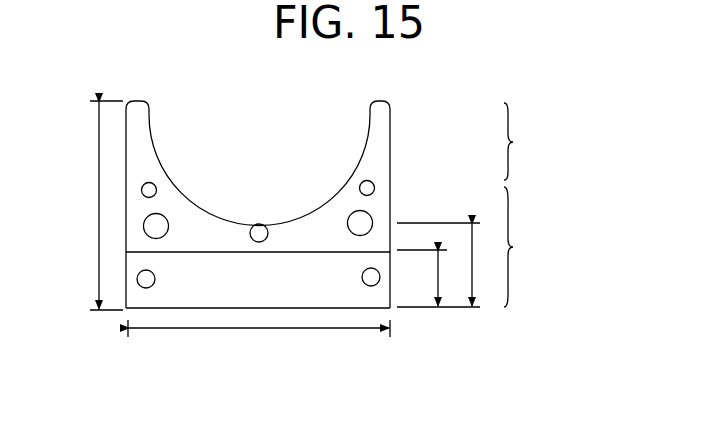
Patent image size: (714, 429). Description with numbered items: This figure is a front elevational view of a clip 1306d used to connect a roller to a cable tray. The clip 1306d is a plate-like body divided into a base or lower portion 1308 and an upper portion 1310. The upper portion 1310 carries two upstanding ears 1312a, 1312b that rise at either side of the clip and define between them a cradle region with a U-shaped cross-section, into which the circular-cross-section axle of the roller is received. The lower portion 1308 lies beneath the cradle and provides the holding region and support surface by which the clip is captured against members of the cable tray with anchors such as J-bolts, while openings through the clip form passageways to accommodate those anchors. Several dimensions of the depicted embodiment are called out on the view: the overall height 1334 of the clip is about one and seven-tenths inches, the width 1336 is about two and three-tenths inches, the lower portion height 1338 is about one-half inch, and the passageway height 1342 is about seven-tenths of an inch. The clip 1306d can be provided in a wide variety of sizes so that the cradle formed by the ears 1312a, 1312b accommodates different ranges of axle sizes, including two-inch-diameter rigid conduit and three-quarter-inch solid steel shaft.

The clip 1306d is at (389, 152).
The upstanding ear 1312a is at (143, 113).
The upstanding ear 1312b is at (377, 112).
The upper portion 1310 is at (533, 141).
The base portion 1308 is at (537, 247).
The height 1334 is at (99, 205).
The width 1336 is at (258, 328).
The lower portion height 1338 is at (440, 277).
The passageway height 1342 is at (473, 265).